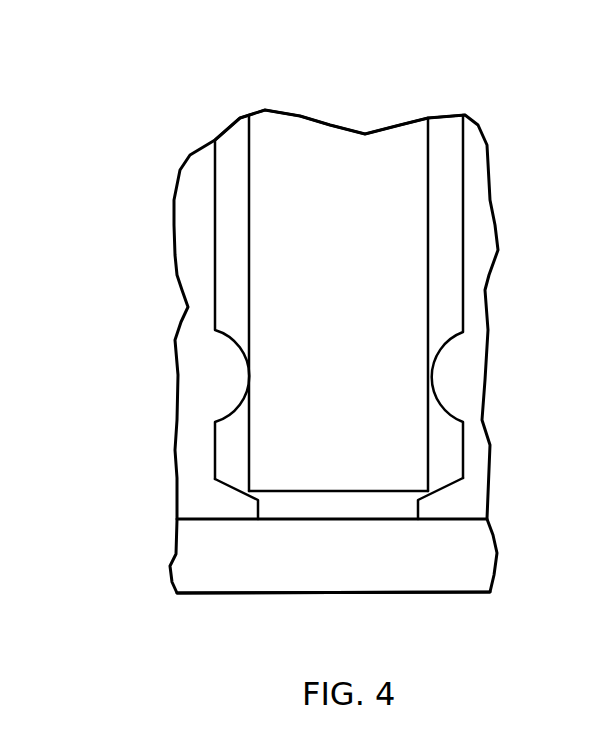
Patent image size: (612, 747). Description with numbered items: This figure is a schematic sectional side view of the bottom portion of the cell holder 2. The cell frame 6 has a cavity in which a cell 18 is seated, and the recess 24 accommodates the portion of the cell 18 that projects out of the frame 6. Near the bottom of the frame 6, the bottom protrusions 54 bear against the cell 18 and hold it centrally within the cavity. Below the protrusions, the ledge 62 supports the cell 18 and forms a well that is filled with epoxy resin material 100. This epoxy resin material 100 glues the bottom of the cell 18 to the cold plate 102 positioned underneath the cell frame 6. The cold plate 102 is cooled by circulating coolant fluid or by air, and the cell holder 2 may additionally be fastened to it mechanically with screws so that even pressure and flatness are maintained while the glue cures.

The cell holder 2 is at (82, 122).
The cell frame 6 is at (175, 265).
The cell 18 is at (300, 116).
The recess 24 is at (464, 140).
The bottom protrusions 54 is at (232, 333).
The ledge 62 is at (235, 483).
The epoxy resin material 100 is at (360, 490).
The cold plate 102 is at (372, 594).